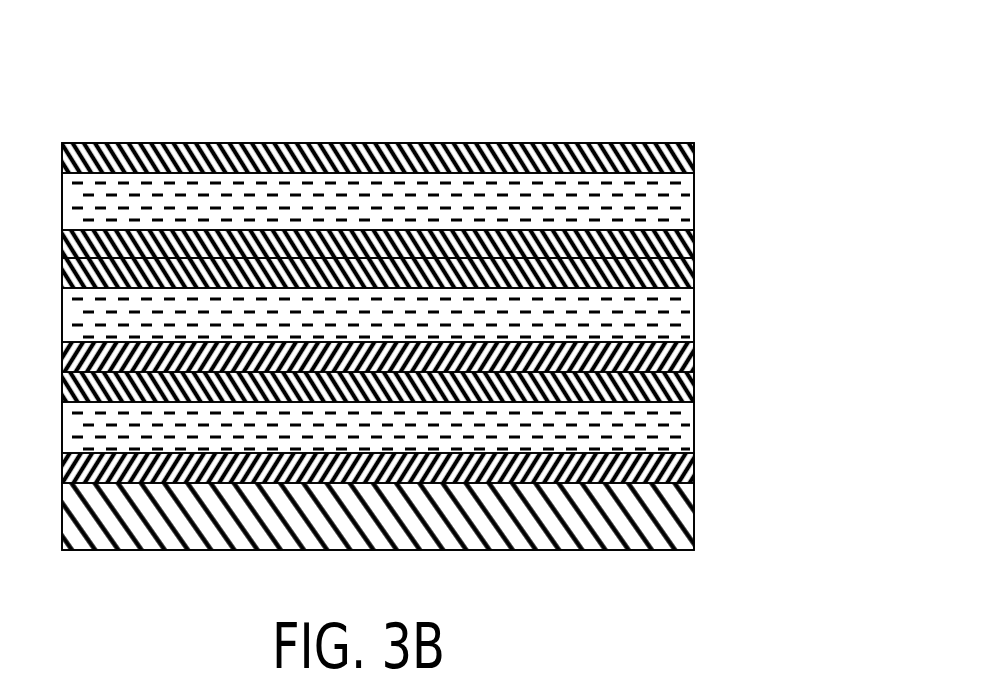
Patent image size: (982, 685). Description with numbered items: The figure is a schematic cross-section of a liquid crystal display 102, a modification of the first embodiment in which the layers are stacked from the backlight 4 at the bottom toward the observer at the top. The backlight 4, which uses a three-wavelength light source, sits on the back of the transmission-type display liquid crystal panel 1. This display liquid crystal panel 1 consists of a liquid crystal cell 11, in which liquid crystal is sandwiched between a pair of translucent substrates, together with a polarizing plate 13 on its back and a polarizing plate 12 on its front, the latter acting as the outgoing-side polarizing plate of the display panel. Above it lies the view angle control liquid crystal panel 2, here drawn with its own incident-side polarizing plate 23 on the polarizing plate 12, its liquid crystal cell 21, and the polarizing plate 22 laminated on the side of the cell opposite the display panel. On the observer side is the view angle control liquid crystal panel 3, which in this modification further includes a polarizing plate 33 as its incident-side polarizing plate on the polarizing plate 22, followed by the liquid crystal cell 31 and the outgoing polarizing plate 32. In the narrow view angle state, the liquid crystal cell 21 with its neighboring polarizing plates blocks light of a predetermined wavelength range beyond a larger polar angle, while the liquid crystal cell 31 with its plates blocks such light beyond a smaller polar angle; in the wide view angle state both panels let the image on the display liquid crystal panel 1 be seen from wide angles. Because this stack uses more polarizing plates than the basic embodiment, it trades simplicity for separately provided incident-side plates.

The liquid crystal display 102 is at (664, 110).
The display liquid crystal panel 1 is at (480, 428).
The view angle control liquid crystal panel 2 is at (478, 308).
The view angle control liquid crystal panel 3 is at (478, 183).
The liquid crystal cell 11 is at (685, 430).
The polarizing plate 12 is at (693, 383).
The polarizing plate 13 is at (441, 474).
The liquid crystal cell 21 is at (683, 316).
The polarizing plate 22 is at (693, 268).
The polarizing plate 23 is at (693, 352).
The liquid crystal cell 31 is at (693, 190).
The polarizing plate 32 is at (693, 147).
The polarizing plate 33 is at (693, 238).
The backlight 4 is at (693, 513).